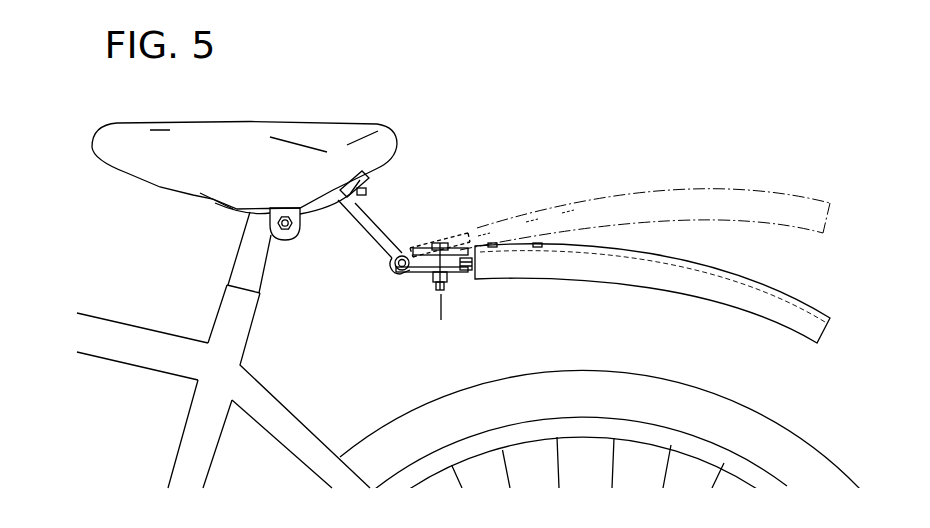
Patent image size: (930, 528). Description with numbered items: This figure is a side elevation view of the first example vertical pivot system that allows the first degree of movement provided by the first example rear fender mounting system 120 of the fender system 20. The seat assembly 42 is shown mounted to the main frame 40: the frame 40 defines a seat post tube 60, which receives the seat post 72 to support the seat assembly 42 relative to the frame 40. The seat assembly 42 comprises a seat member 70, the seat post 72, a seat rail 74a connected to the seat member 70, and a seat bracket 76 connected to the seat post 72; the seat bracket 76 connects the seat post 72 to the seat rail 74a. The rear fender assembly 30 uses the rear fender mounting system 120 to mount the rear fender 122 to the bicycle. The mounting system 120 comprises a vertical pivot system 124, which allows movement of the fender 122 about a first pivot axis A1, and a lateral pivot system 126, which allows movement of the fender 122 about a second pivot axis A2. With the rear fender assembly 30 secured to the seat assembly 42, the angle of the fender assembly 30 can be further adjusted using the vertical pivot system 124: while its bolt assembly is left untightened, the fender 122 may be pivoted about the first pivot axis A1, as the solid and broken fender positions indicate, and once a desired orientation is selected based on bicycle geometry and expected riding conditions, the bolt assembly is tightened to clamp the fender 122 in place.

The fender system 20 is at (688, 134).
The rear fender assembly 30 is at (653, 223).
The main frame 40 is at (122, 317).
The seat assembly 42 is at (158, 124).
The seat post tube 60 is at (227, 313).
The seat member 70 is at (264, 149).
The seat post 72 is at (245, 266).
The seat rail 74a is at (317, 212).
The seat bracket 76 is at (290, 238).
The rear fender mounting system 120 is at (451, 208).
The rear fender 122 is at (673, 283).
The vertical pivot system 124 is at (399, 245).
The lateral pivot system 126 is at (454, 288).
The first pivot axis A1 is at (401, 270).
The second pivot axis A2 is at (440, 313).